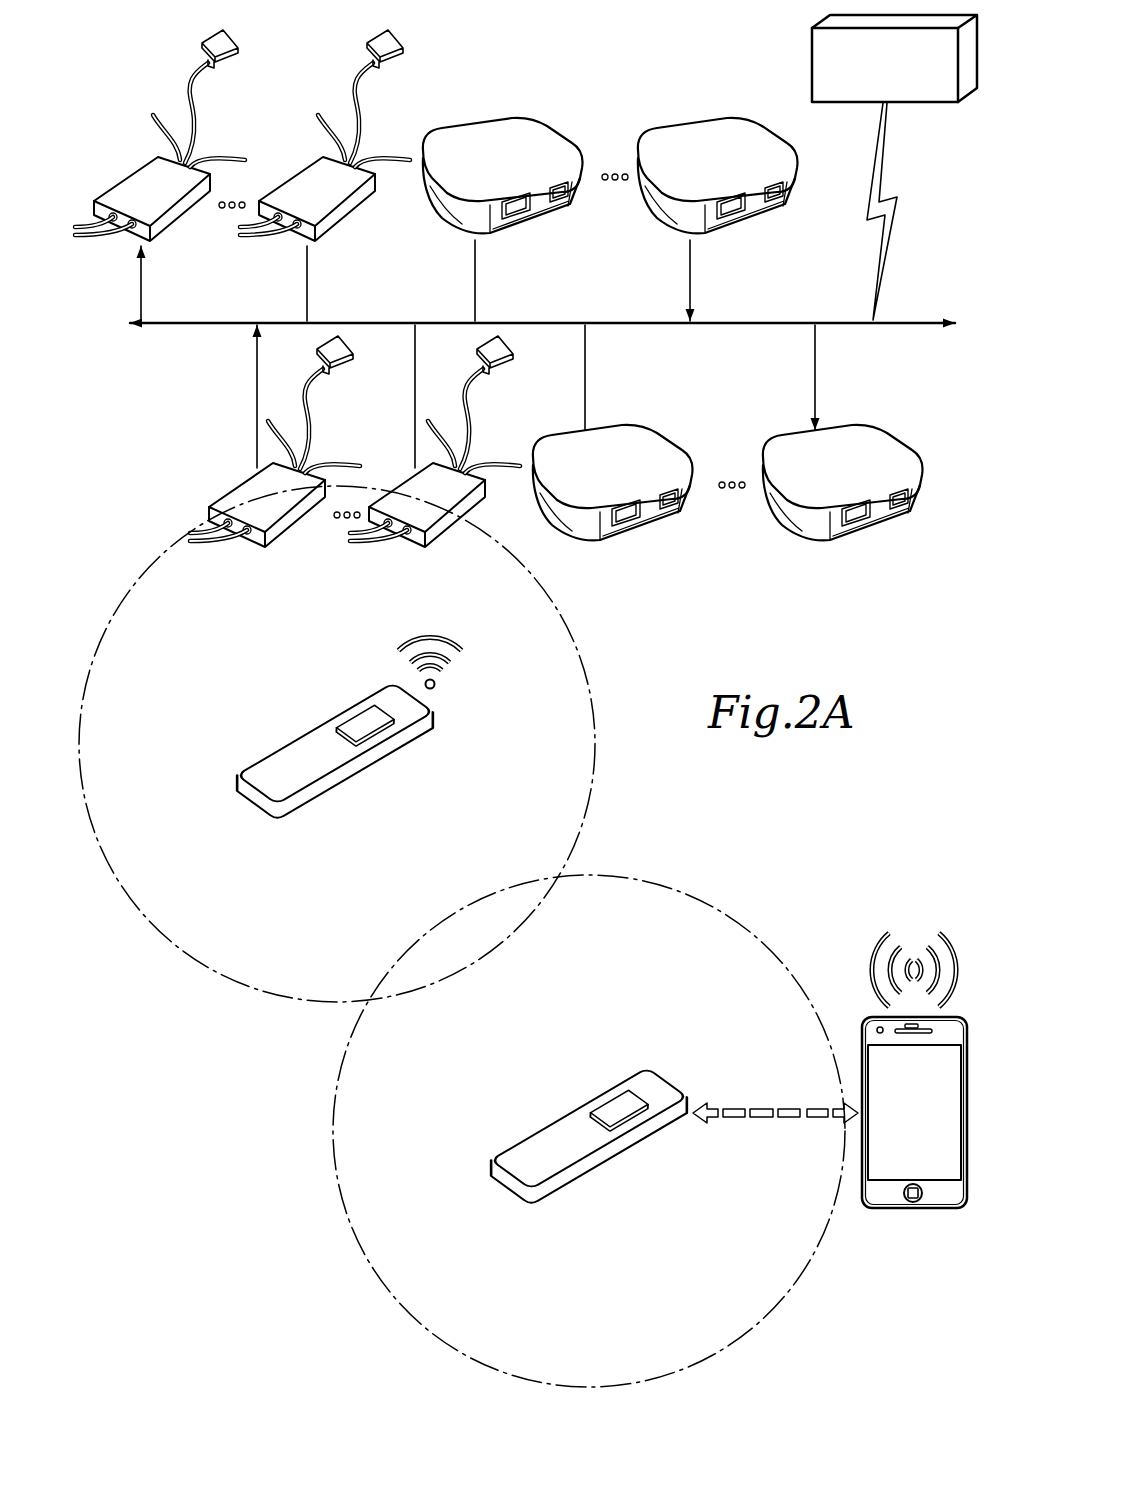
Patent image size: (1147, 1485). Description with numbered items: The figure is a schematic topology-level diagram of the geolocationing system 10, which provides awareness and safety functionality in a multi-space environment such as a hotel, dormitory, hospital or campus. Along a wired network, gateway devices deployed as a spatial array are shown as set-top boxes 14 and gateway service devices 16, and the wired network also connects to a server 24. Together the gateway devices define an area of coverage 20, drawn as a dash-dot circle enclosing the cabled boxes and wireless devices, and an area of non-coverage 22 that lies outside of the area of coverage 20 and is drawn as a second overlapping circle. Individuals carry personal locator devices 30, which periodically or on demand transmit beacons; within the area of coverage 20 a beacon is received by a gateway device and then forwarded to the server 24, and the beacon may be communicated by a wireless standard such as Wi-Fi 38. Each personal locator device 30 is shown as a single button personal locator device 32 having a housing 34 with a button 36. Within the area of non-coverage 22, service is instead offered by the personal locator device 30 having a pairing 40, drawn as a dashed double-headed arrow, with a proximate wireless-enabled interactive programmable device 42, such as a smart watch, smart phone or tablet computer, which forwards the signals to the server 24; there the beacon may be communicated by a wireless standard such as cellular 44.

The geolocationing system 10 is at (155, 60).
The set-top box 14 is at (128, 170).
The gateway service device 16 is at (531, 133).
The area of coverage 20 is at (574, 640).
The area of non-coverage 22 is at (737, 900).
The server 24 is at (812, 67).
The personal locator device 30 is at (462, 961).
The single button personal locator device 32 is at (325, 804).
The housing 34 is at (370, 762).
The button 36 is at (357, 718).
The Wi-Fi 38 is at (454, 666).
The pairing 40 is at (761, 1109).
The proximate wireless-enabled interactive programmable device 42 is at (918, 1212).
The cellular 44 is at (877, 942).